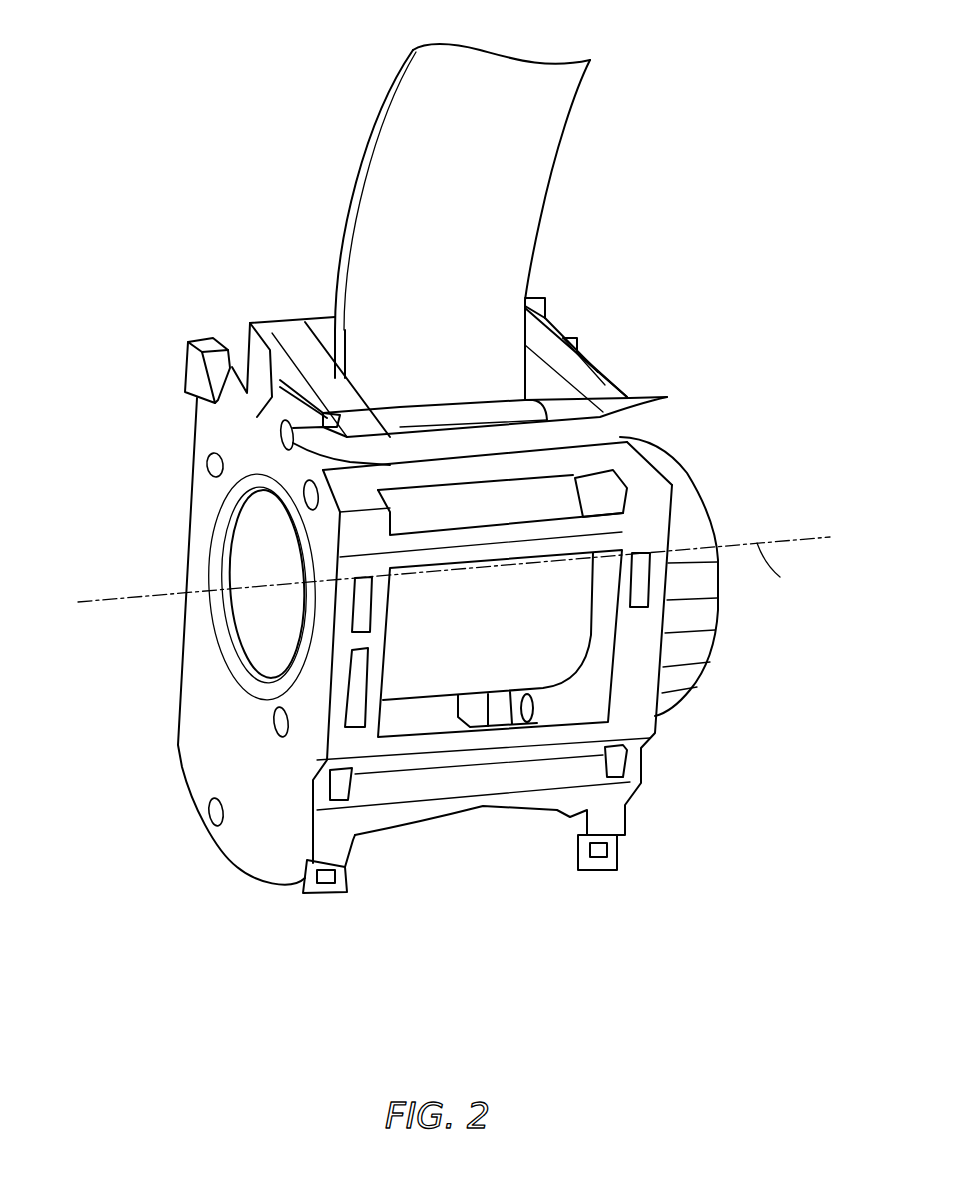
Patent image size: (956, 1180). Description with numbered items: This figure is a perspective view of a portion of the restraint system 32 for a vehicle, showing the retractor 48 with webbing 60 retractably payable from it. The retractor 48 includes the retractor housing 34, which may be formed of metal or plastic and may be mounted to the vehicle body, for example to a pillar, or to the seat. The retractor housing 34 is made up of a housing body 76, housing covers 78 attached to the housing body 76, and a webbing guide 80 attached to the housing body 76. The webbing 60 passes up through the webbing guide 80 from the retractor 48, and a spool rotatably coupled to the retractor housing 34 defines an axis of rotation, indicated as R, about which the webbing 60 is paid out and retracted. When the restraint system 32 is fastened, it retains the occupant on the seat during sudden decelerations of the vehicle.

The restraint system 32 is at (170, 126).
The webbing 60 is at (557, 140).
The webbing guide 80 is at (555, 325).
The housing body 76 is at (195, 428).
The retractor housing 34 is at (193, 472).
The retractor 48 is at (133, 720).
The housing covers 78 is at (662, 713).